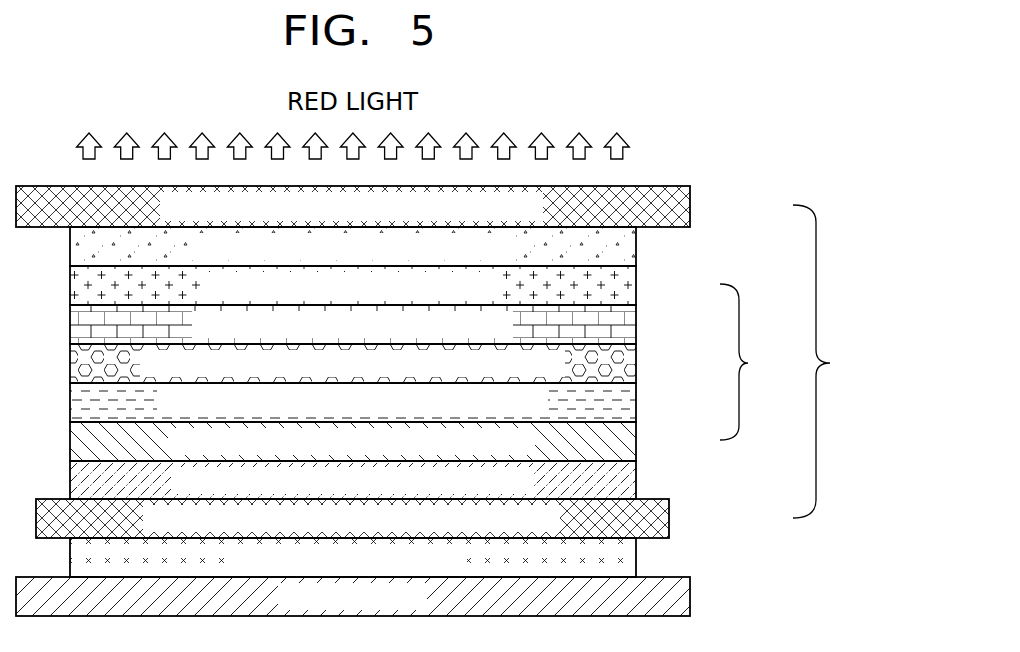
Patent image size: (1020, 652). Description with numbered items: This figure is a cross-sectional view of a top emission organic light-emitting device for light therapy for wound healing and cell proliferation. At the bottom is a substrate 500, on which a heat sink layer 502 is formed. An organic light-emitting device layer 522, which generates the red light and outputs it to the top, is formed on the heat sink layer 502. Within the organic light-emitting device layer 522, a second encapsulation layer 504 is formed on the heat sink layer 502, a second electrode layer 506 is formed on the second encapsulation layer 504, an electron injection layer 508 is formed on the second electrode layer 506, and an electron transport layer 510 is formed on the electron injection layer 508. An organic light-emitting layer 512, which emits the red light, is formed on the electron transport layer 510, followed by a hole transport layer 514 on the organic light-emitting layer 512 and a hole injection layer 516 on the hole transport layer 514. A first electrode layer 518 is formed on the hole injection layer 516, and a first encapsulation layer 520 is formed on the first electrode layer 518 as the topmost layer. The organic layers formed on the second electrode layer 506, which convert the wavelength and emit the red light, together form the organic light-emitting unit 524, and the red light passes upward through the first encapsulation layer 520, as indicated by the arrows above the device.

The substrate 500 is at (690, 598).
The heat sink layer 502 is at (636, 558).
The second encapsulation layer 504 is at (669, 520).
The second electrode layer 506 is at (636, 479).
The electron injection layer 508 is at (636, 440).
The electron transport layer 510 is at (636, 402).
The organic light-emitting layer 512 is at (636, 363).
The hole transport layer 514 is at (636, 325).
The hole injection layer 516 is at (636, 285).
The first electrode layer 518 is at (636, 245).
The first encapsulation layer 520 is at (690, 207).
The organic light-emitting device layer 522 is at (839, 361).
The organic light-emitting unit 524 is at (762, 362).